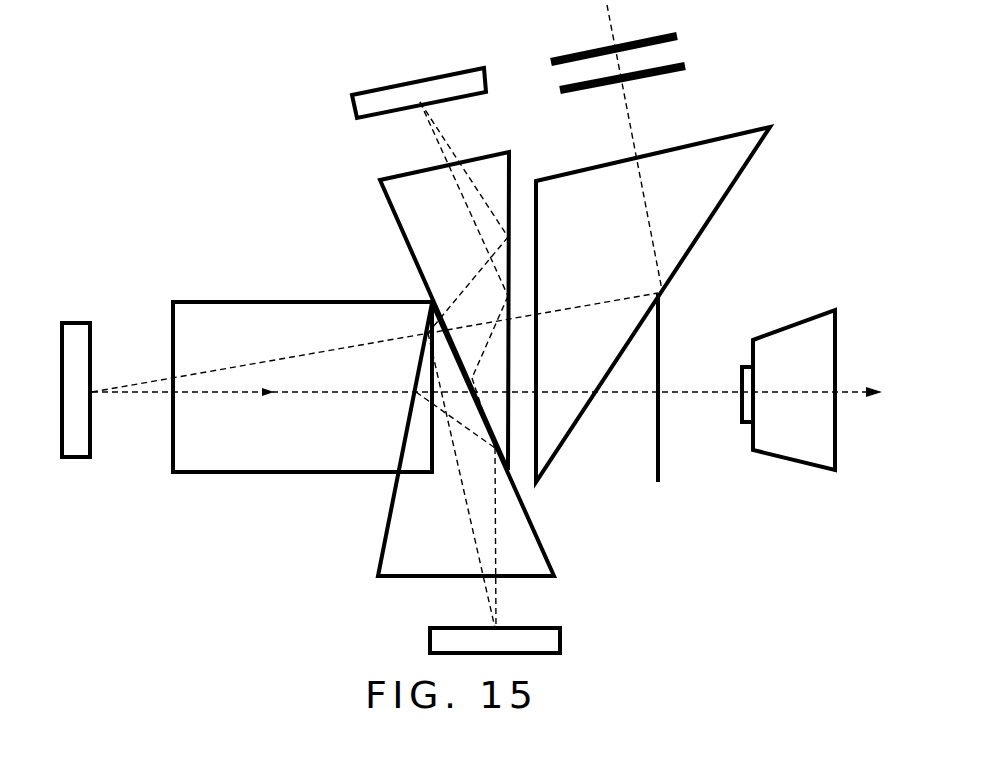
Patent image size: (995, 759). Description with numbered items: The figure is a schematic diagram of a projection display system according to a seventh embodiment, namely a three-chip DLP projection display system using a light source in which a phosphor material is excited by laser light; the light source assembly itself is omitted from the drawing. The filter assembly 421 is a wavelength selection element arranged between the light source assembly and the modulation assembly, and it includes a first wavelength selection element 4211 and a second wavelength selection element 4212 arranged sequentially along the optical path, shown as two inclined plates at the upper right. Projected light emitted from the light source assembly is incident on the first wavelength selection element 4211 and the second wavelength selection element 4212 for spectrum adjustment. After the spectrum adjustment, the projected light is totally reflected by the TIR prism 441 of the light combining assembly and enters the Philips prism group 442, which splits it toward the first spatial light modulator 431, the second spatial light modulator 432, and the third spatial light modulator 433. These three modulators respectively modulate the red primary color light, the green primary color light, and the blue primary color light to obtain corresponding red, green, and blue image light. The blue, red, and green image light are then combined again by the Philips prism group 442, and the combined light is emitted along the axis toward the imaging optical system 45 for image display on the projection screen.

The imaging optical system 45 is at (785, 455).
The filter assembly 421 is at (690, 49).
The first wavelength selection element 4211 is at (677, 30).
The second wavelength selection element 4212 is at (688, 62).
The first spatial light modulator 431 is at (430, 640).
The second spatial light modulator 432 is at (70, 322).
The third spatial light modulator 433 is at (402, 98).
The TIR prism 441 is at (740, 177).
The Philips prism group 442 is at (220, 476).